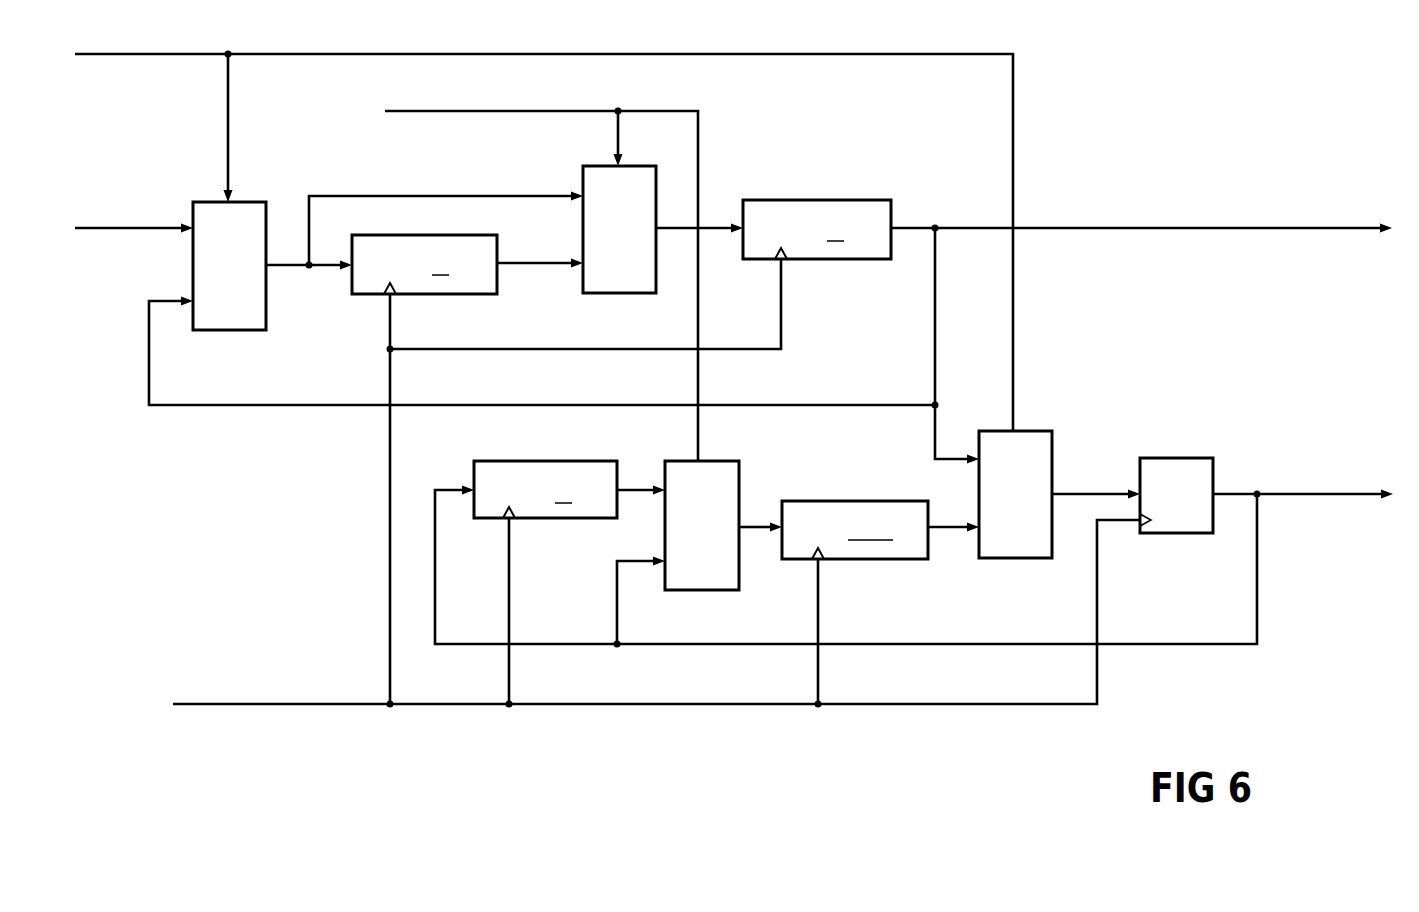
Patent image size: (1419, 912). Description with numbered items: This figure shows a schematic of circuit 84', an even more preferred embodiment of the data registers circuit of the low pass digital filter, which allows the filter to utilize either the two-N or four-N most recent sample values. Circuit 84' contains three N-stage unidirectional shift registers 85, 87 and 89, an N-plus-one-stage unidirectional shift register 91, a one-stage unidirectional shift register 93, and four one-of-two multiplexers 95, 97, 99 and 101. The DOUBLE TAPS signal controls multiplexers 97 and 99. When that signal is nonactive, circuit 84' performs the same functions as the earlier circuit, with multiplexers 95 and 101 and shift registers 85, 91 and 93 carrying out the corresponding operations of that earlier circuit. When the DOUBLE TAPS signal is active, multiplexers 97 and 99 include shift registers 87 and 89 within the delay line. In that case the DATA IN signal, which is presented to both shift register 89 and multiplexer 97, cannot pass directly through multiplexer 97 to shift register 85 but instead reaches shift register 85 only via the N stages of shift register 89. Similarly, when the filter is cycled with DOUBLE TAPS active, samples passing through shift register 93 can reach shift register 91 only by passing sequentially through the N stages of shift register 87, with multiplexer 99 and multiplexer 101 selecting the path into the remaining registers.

The circuit 84' is at (734, 403).
The multiplexer 95 is at (266, 208).
The N-stage unidirectional shift register 89 is at (500, 249).
The multiplexer 97 is at (656, 173).
The N-stage unidirectional shift register 85 is at (891, 207).
The multiplexer 101 is at (1052, 437).
The 1-stage unidirectional shift register 93 is at (1205, 480).
The N-stage unidirectional shift register 87 is at (618, 478).
The multiplexer 99 is at (739, 470).
The N+1-stage unidirectional shift register 91 is at (914, 557).